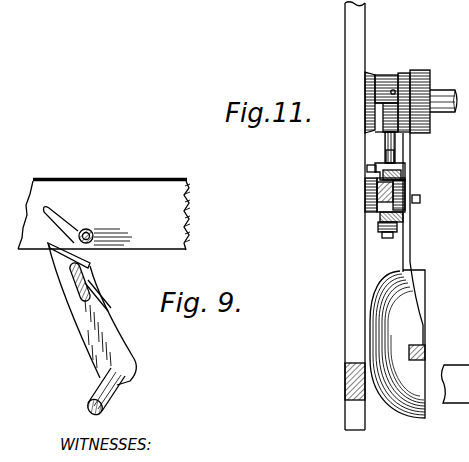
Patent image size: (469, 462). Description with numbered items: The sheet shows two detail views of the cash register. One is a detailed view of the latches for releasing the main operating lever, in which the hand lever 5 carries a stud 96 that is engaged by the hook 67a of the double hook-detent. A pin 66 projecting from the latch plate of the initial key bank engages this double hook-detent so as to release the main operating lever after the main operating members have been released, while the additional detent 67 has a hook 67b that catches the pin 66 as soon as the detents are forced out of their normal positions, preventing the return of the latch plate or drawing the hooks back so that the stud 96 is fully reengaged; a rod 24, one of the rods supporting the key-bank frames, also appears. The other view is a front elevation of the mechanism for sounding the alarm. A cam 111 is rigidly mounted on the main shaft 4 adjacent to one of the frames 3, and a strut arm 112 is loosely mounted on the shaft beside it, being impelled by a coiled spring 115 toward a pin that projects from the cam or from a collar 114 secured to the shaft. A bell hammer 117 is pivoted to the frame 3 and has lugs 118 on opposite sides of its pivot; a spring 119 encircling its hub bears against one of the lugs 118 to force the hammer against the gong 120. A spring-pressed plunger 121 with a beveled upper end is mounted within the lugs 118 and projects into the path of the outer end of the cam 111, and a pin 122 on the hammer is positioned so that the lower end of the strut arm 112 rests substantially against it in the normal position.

In FIG. 9, the hand lever 5 is at (104, 215).
In FIG. 9, the hook detent 67a is at (58, 226).
In FIG. 9, the stud 96 is at (114, 235).
In FIG. 9, the hook 67b is at (92, 265).
In FIG. 9, the pin 66 is at (93, 283).
In FIG. 9, the detent 67 is at (83, 323).
In FIG. 9, the rod 24 is at (114, 395).
In FIG. 11, the cash register frame 3 is at (351, 43).
In FIG. 11, the cam 111 is at (383, 131).
In FIG. 11, the coiled spring 115 is at (395, 90).
In FIG. 11, the collar 114 is at (422, 70).
In FIG. 11, the main shaft 4 is at (442, 92).
In FIG. 11, the lugs 118 is at (380, 164).
In FIG. 11, the plunger 121 is at (386, 153).
In FIG. 11, the spring 119 is at (380, 199).
In FIG. 11, the pin 122 is at (421, 199).
In FIG. 11, the strut arm 112 is at (411, 152).
In FIG. 11, the bell hammer 117 is at (407, 247).
In FIG. 11, the gong 120 is at (396, 420).